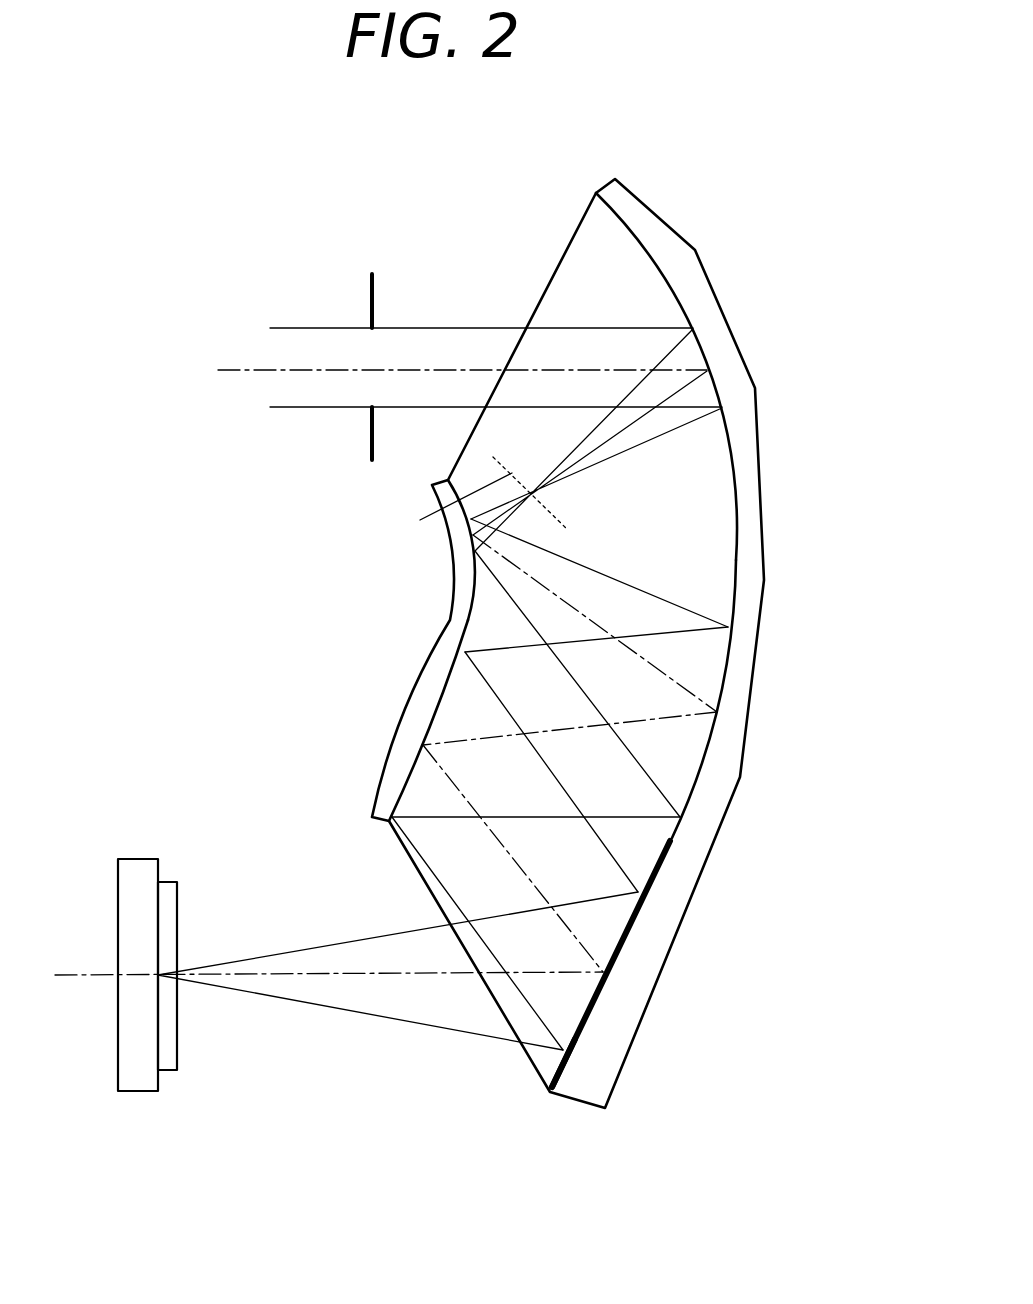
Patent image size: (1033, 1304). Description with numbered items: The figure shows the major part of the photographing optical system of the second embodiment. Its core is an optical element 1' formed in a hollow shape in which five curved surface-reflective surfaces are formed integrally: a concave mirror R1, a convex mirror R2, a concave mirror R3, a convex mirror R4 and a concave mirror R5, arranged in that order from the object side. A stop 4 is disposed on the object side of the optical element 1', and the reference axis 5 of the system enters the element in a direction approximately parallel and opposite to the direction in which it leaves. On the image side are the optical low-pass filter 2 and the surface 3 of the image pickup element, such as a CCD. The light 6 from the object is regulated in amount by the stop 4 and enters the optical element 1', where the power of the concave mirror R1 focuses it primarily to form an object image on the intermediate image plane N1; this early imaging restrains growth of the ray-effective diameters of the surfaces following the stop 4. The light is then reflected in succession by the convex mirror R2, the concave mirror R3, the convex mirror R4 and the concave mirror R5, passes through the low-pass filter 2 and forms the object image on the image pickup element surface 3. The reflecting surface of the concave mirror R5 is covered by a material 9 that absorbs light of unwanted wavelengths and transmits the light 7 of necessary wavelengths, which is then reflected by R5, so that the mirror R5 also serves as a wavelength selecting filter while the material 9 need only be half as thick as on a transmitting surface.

The optical element 1' is at (620, 643).
The optical low-pass filter 2 is at (177, 1053).
The surface of the image pickup element 3 is at (118, 1067).
The stop 4 is at (373, 280).
The reference axis 5 is at (237, 368).
The light from the object 6 is at (310, 327).
The light of necessary wavelengths 7 is at (350, 942).
The material 9 is at (557, 1067).
The concave mirror R1 is at (675, 288).
The convex mirror R2 is at (475, 580).
The concave mirror R3 is at (732, 612).
The convex mirror R4 is at (407, 772).
The concave mirror R5 is at (617, 960).
The intermediate image plane N1 is at (420, 520).